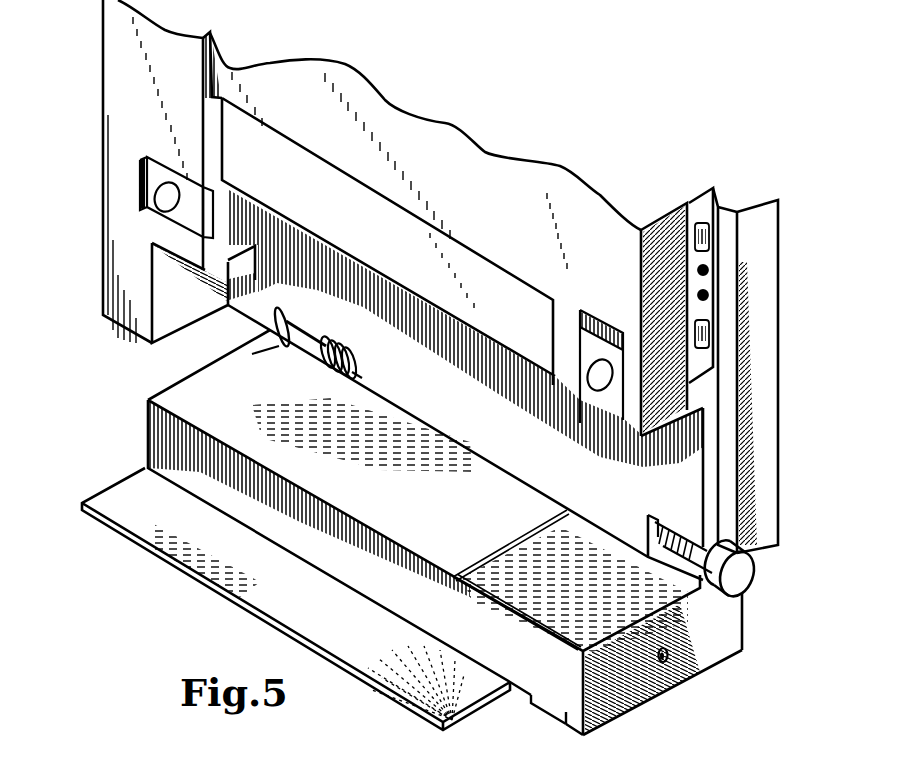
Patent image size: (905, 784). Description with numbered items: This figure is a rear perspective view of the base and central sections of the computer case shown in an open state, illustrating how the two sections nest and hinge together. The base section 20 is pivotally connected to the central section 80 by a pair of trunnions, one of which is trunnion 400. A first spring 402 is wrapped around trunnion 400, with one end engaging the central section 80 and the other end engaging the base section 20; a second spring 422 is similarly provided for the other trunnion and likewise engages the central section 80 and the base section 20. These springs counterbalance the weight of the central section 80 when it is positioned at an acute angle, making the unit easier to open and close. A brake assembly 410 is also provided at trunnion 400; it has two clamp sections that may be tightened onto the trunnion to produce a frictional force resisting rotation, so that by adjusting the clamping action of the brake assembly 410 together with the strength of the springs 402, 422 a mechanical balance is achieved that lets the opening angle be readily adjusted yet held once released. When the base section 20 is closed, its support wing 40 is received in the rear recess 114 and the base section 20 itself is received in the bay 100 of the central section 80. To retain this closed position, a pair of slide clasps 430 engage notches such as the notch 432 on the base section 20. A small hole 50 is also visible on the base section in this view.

The base section 20 is at (184, 400).
The support wing 40 is at (258, 601).
The mounting hole 50 is at (670, 660).
The central section 80 is at (593, 205).
The bay 100 is at (478, 397).
The rear recess 114 is at (408, 246).
The trunnion 400 is at (350, 362).
The first spring 402 is at (325, 342).
The brake assembly 410 is at (272, 335).
The spring 422 is at (684, 526).
The slide clasp 430 is at (140, 199).
The notch 432 is at (540, 716).